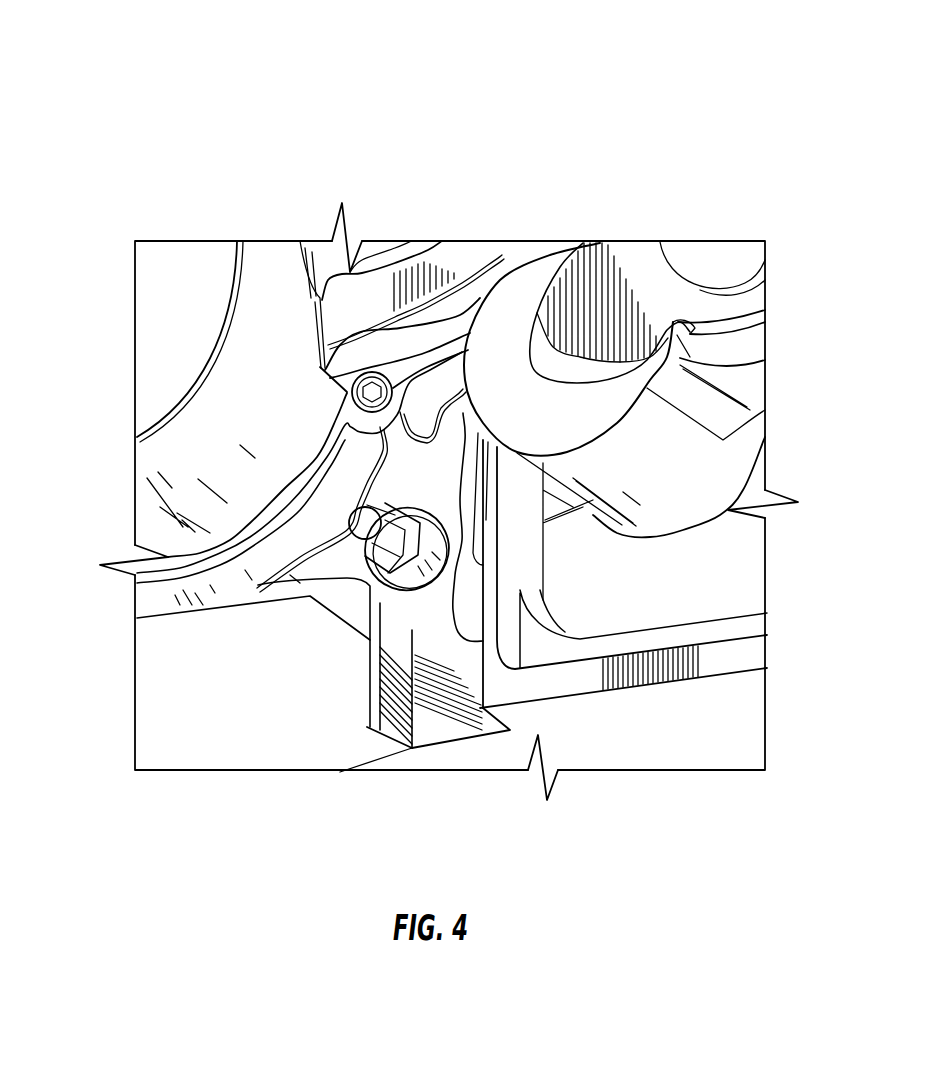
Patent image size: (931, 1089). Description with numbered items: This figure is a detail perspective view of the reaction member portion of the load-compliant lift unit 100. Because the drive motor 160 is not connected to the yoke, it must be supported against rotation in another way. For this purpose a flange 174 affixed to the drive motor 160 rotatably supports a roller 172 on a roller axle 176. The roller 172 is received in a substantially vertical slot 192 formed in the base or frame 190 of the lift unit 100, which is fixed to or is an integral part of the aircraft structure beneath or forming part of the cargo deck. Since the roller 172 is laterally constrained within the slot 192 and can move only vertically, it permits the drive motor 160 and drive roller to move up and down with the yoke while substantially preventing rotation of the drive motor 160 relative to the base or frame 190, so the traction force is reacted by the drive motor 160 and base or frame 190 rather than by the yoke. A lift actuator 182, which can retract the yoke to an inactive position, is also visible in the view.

The lift unit 100 is at (560, 92).
The drive motor 160 is at (152, 297).
The roller 172 is at (437, 630).
The flange 174 is at (405, 600).
The roller axle 176 is at (363, 530).
The lift actuator 182 is at (630, 275).
The base or frame 190 is at (755, 650).
The slot 192 is at (453, 717).